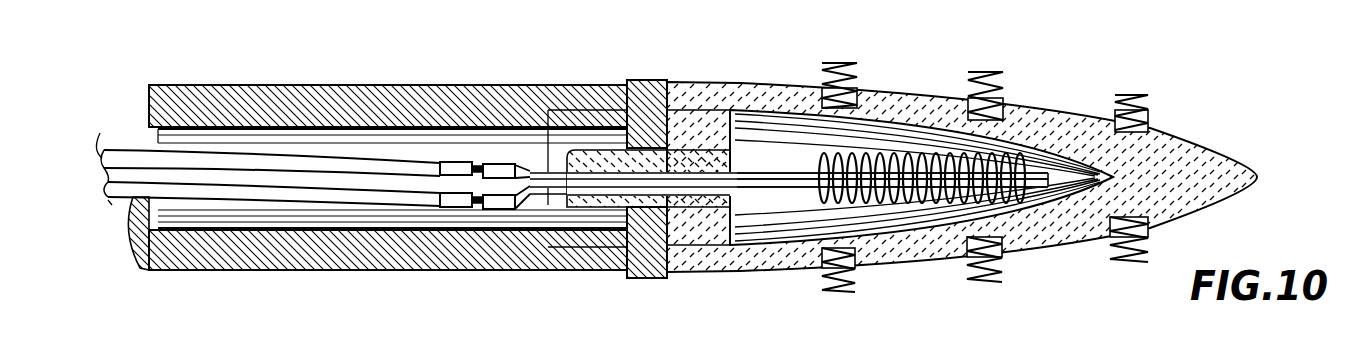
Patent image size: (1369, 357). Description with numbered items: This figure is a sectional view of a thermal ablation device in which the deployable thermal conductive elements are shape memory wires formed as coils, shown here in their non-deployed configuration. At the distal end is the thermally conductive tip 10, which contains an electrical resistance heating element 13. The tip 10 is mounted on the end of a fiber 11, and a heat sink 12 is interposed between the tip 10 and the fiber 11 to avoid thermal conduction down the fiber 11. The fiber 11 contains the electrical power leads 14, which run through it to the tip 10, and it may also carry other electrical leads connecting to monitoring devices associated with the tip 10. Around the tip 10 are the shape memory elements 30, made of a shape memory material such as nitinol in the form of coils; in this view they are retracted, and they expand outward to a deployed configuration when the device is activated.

The thermally conductive tip 10 is at (1254, 127).
The fiber 11 is at (354, 100).
The heat sink 12 is at (647, 80).
The electrical resistance heating element 13 is at (896, 202).
The electrical power leads 14 is at (303, 160).
The shape memory elements 30 is at (1117, 97).